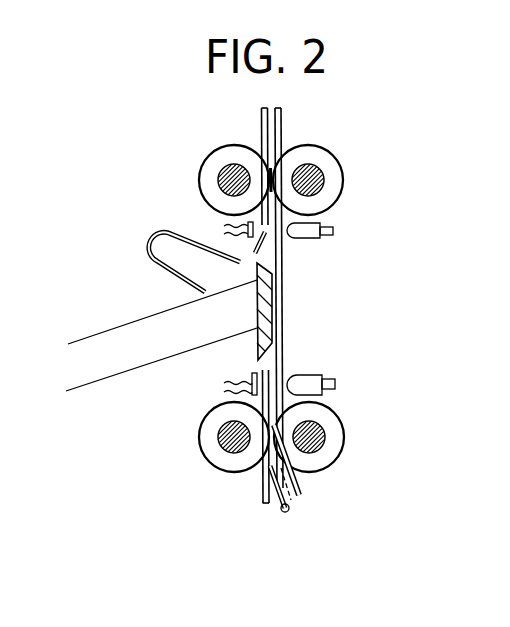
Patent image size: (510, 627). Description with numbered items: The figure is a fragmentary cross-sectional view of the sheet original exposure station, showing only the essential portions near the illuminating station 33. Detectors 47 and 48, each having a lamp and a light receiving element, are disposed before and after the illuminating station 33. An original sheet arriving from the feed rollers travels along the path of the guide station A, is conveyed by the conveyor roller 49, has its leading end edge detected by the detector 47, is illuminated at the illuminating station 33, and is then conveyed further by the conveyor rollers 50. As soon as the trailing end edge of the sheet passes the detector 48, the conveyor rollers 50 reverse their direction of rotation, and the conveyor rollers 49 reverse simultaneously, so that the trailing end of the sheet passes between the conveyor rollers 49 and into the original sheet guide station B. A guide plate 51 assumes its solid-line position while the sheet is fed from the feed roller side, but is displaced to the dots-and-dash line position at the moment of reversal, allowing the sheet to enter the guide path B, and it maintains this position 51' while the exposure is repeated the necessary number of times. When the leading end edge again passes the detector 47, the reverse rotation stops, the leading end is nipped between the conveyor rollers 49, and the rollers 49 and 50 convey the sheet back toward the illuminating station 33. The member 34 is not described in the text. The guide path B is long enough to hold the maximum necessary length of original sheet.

The conveyor rollers 50 is at (340, 164).
The conveyor roller 49 is at (346, 433).
The detector 48 is at (253, 226).
The detector 47 is at (306, 375).
The illuminating station 33 is at (252, 345).
The hook guide 34 is at (160, 247).
The guide plate 51 is at (258, 481).
The guide plate position 51' is at (331, 485).
The guide station A is at (294, 507).
The original sheet guide station B is at (268, 522).